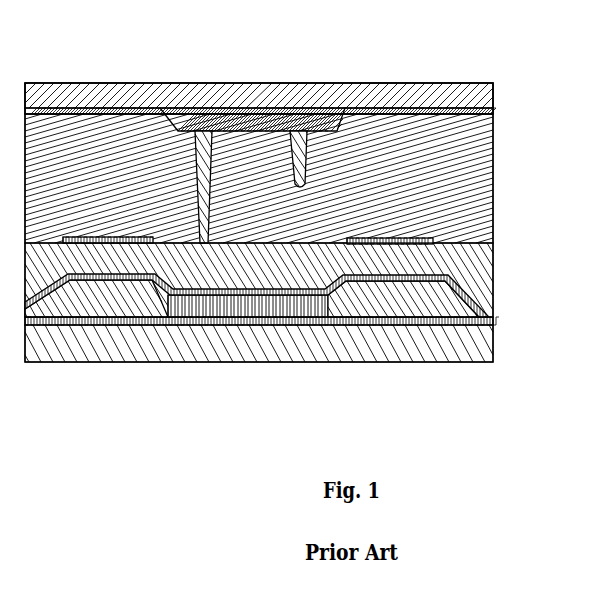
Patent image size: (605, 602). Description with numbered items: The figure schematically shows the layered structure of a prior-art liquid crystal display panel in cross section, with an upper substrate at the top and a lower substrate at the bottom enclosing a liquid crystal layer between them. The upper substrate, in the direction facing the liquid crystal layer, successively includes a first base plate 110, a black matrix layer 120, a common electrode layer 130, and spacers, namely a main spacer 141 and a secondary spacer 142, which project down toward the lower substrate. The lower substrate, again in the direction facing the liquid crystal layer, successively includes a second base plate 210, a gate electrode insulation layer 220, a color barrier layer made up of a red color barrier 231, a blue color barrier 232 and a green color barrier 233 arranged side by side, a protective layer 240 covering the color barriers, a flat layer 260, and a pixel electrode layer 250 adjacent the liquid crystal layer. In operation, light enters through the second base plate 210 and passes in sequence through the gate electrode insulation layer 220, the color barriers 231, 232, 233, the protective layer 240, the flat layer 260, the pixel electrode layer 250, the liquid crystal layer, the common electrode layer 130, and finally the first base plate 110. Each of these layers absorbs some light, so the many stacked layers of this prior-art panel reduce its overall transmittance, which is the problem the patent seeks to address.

The first base plate 110 is at (442, 83).
The black matrix layer 120 is at (381, 83).
The common electrode layer 130 is at (493, 89).
The main spacer 141 is at (211, 113).
The secondary spacer 142 is at (305, 113).
The pixel electrode layer 250 is at (388, 233).
The flat layer 260 is at (477, 265).
The protective layer 240 is at (480, 305).
The gate electrode insulation layer 220 is at (482, 321).
The second base plate 210 is at (463, 345).
The red color barrier 231 is at (82, 302).
The blue color barrier 232 is at (313, 308).
The green color barrier 233 is at (383, 293).